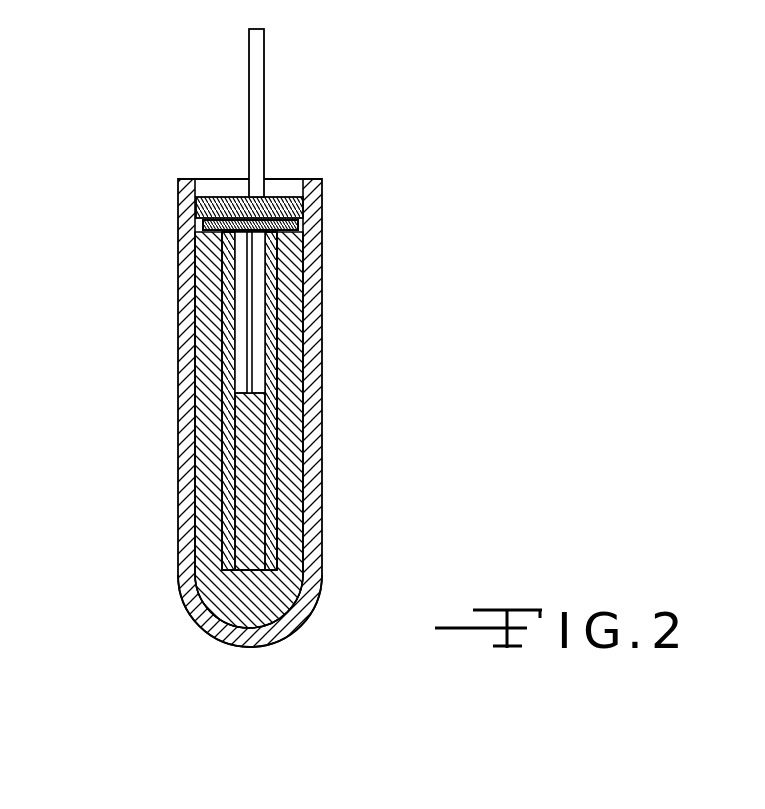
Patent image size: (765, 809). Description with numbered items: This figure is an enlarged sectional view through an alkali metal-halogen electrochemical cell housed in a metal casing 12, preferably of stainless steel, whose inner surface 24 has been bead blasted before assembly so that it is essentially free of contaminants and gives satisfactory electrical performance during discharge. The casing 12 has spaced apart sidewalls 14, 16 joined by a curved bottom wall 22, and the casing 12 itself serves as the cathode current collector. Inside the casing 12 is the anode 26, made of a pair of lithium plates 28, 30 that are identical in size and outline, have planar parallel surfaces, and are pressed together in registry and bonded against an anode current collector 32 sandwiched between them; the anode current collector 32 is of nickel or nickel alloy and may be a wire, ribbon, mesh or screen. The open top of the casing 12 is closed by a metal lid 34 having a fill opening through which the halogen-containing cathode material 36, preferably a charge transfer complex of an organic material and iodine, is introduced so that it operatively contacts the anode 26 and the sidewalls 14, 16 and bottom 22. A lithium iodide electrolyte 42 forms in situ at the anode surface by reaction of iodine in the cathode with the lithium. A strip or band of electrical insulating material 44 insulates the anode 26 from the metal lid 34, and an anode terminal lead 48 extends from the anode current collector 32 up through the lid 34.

The casing 12 is at (277, 346).
The sidewall 14 is at (315, 377).
The sidewall 16 is at (185, 302).
The curved bottom wall 22 is at (263, 650).
The inner surface 24 is at (204, 448).
The anode 26 is at (292, 332).
The lithium plate 28 is at (258, 266).
The lithium plate 30 is at (248, 272).
The anode current collector 32 is at (258, 382).
The lid 34 is at (273, 197).
The cathode material 36 is at (295, 517).
The lithium iodide electrolyte 42 is at (227, 360).
The electrical insulating material 44 is at (298, 210).
The anode terminal lead 48 is at (264, 83).